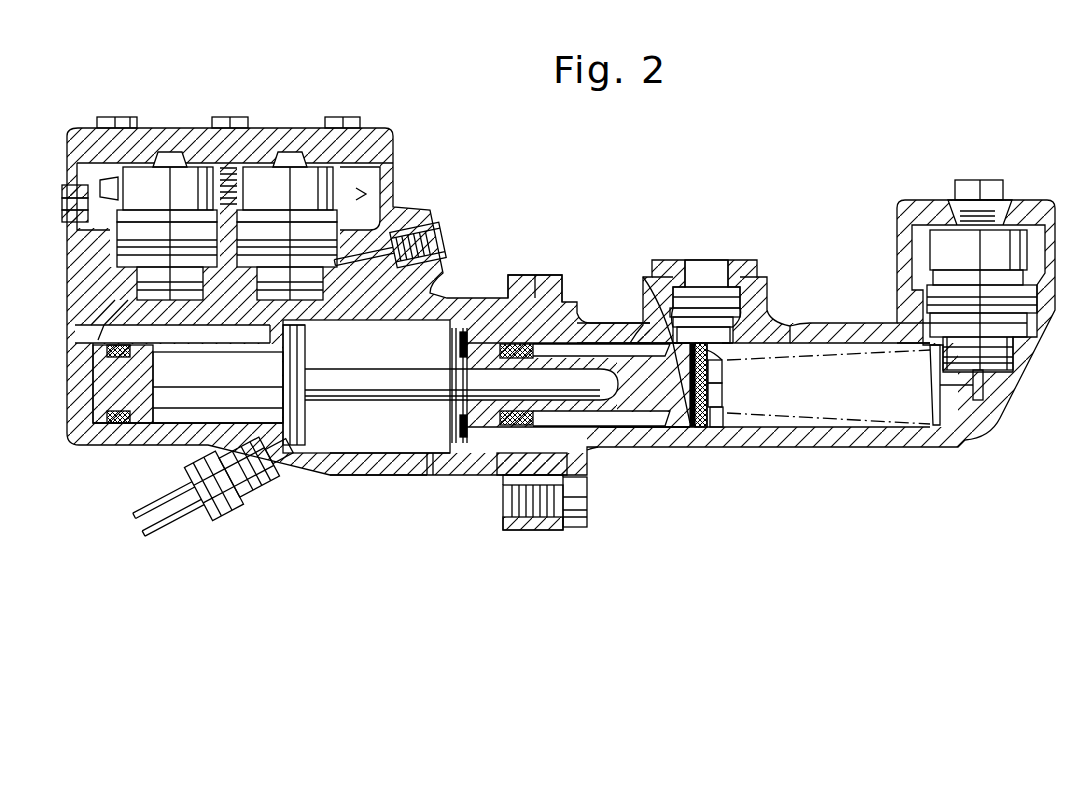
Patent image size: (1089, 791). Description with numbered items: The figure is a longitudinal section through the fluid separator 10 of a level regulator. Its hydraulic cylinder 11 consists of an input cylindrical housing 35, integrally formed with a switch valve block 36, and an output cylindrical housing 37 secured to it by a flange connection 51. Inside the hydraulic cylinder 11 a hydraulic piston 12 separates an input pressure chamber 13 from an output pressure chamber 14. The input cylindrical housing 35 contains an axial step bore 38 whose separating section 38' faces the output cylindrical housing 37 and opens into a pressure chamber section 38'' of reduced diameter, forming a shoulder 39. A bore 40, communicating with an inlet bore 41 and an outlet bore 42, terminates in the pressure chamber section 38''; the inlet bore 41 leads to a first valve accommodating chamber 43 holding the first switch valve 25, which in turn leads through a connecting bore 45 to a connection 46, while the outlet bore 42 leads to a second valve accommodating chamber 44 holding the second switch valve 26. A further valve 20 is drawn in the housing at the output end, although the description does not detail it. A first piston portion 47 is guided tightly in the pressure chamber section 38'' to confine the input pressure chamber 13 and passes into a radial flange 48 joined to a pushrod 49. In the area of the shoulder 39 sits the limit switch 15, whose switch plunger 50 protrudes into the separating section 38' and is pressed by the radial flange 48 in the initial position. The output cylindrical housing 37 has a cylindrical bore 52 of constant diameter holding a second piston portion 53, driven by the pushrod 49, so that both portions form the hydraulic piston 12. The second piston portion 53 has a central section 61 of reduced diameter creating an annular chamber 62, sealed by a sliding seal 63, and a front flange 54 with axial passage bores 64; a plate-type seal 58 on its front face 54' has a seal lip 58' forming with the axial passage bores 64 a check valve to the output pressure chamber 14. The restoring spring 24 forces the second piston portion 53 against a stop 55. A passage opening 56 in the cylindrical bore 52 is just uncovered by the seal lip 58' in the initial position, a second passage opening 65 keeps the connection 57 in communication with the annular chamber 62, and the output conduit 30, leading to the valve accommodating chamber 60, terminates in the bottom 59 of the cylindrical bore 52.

The fluid separator 10 is at (797, 186).
The hydraulic cylinder 11 is at (572, 285).
The hydraulic piston 12 is at (443, 358).
The input pressure chamber 13 is at (92, 409).
The output pressure chamber 14 is at (826, 426).
The limit switch 15 is at (212, 523).
The valve 20 is at (1030, 257).
The restoring spring 24 is at (934, 440).
The first switch valve 25 is at (285, 180).
The second switch valve 26 is at (164, 172).
The output conduit 30 is at (983, 387).
The input cylindrical housing 35 is at (412, 463).
The switch valve block 36 is at (400, 222).
The output cylindrical housing 37 is at (705, 430).
The axial step bore 38 is at (378, 476).
The separating section 38' is at (390, 480).
The pressure chamber section 38'' is at (188, 450).
The shoulder 39 is at (306, 336).
The bore 40 is at (78, 342).
The inlet bore 41 is at (177, 329).
The outlet bore 42 is at (80, 279).
The first valve accommodating chamber 43 is at (327, 280).
The second valve accommodating chamber 44 is at (82, 240).
The connecting bore 45 is at (443, 254).
The connection 46 is at (430, 232).
The first piston portion 47 is at (158, 395).
The radial flange 48 is at (299, 417).
The pushrod 49 is at (406, 383).
The switch plunger 50 is at (287, 462).
The flange connection 51 is at (537, 531).
The cylindrical bore 52 is at (584, 343).
The second piston portion 53 is at (645, 424).
The front flange 54 is at (752, 400).
The front face 54' is at (743, 377).
The stop 55 is at (460, 455).
The passage opening 56 is at (757, 302).
The connection 57 is at (700, 277).
The plate-type seal 58 is at (754, 416).
The seal lip 58' is at (740, 452).
The bottom 59 is at (957, 433).
The valve accommodating chamber 60 is at (1012, 350).
The central section 61 is at (611, 449).
The annular chamber 62 is at (585, 451).
The sliding seal 63 is at (494, 465).
The axial passage bores 64 is at (665, 353).
The second passage opening 65 is at (670, 347).